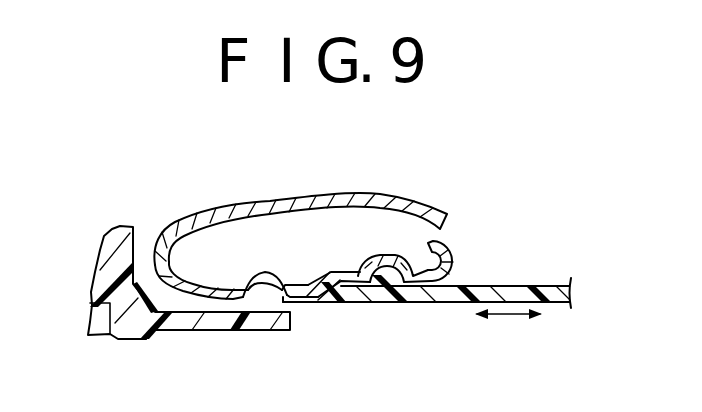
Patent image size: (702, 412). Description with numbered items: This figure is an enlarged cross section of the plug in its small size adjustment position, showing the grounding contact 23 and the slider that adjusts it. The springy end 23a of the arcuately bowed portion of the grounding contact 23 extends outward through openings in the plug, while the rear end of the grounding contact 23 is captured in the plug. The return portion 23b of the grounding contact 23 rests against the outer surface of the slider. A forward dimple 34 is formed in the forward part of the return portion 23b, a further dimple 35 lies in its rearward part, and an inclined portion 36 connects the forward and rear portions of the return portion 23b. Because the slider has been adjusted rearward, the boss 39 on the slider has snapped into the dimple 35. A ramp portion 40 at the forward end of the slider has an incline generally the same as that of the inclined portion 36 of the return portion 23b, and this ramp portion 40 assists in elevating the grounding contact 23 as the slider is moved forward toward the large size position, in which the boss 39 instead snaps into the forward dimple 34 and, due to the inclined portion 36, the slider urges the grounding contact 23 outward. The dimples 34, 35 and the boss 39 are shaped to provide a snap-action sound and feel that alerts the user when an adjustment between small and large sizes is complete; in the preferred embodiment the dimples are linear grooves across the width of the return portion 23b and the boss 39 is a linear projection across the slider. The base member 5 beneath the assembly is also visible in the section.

The base plate 5 is at (550, 304).
The grounding contact 23 is at (392, 254).
The springy end 23a is at (160, 247).
The return portion 23b is at (328, 270).
The forward dimple 34 is at (263, 270).
The dimple 35 is at (418, 208).
The inclined portion 36 is at (312, 283).
The boss 39 is at (385, 277).
The ramp portion 40 is at (322, 292).